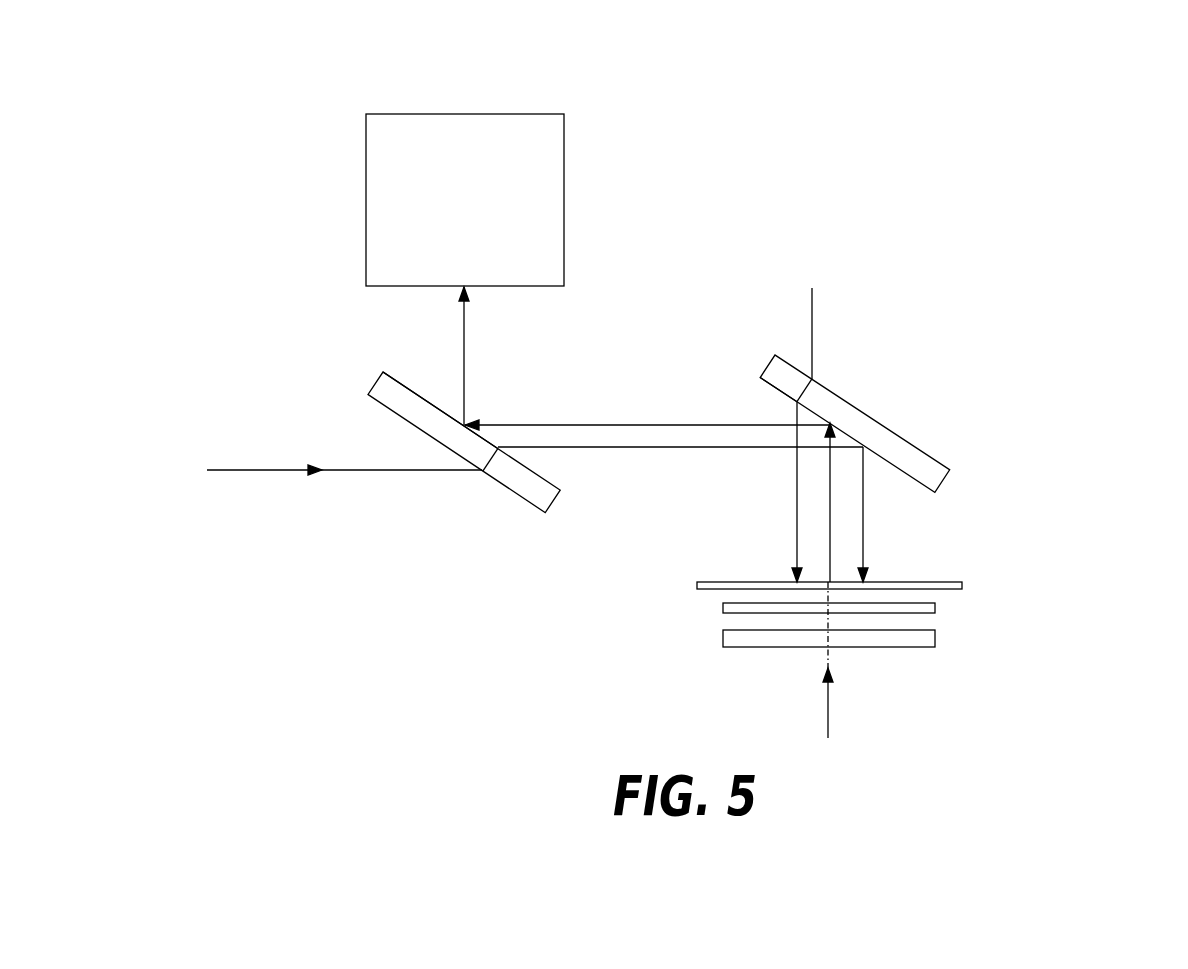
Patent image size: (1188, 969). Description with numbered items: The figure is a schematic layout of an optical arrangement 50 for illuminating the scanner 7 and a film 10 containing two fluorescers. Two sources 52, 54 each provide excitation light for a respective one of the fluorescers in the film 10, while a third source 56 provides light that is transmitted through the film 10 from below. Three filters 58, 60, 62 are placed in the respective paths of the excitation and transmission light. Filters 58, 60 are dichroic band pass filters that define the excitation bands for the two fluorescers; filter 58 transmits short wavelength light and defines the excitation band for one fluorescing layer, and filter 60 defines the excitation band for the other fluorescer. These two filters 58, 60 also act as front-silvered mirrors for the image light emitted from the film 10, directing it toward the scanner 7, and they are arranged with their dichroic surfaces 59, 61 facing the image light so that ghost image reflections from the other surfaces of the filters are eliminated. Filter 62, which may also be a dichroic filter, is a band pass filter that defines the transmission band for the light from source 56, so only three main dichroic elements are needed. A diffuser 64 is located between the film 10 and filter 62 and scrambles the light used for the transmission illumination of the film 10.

The optical arrangement 50 is at (828, 182).
The scanner 7 is at (458, 113).
The filter 58 is at (400, 424).
The dichroic surface 59 is at (408, 383).
The source 52 is at (265, 472).
The source 54 is at (813, 302).
The filter 60 is at (898, 424).
The dichroic surface 61 is at (772, 389).
The film 10 is at (958, 580).
The diffuser 64 is at (935, 601).
The filter 62 is at (917, 648).
The source 56 is at (827, 713).